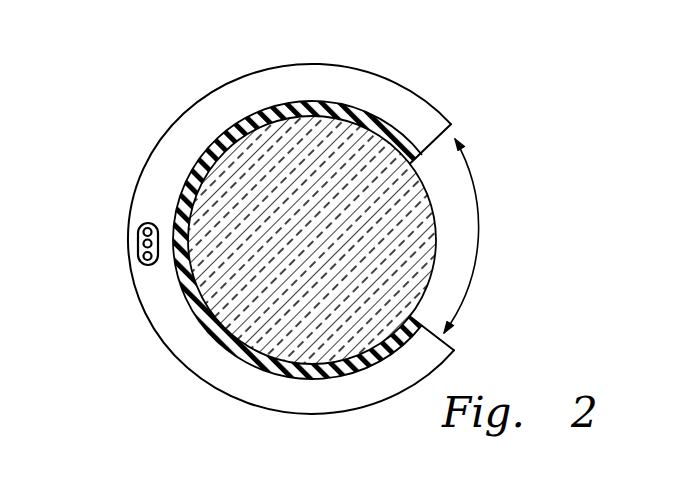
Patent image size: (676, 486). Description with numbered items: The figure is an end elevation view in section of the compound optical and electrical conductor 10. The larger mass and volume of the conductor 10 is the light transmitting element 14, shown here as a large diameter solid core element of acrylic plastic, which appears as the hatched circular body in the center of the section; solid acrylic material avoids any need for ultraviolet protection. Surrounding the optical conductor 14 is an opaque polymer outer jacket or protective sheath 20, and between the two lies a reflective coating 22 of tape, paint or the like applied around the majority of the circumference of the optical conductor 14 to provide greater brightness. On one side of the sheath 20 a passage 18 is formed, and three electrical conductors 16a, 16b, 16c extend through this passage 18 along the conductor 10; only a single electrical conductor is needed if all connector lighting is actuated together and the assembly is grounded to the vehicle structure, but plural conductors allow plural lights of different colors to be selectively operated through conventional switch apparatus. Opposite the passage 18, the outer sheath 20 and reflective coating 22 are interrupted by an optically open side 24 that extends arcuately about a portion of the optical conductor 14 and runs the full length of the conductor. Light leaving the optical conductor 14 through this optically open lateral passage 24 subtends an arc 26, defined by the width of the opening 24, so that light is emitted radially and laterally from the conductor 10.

The compound optical and electrical conductor 10 is at (324, 216).
The light transmitting element 14 is at (238, 185).
The electrical conductor 16a is at (143, 231).
The electrical conductor 16b is at (143, 244).
The electrical conductor 16c is at (143, 257).
The passage 18 is at (138, 267).
The outer jacket or protective sheath 20 is at (268, 65).
The reflective coating 22 is at (356, 106).
The optically open side 24 is at (466, 238).
The arc 26 is at (526, 288).